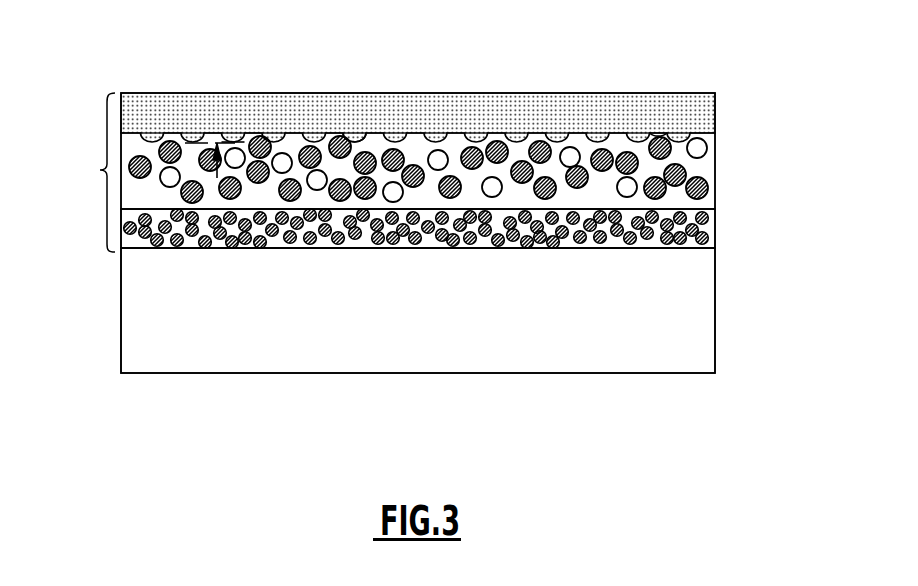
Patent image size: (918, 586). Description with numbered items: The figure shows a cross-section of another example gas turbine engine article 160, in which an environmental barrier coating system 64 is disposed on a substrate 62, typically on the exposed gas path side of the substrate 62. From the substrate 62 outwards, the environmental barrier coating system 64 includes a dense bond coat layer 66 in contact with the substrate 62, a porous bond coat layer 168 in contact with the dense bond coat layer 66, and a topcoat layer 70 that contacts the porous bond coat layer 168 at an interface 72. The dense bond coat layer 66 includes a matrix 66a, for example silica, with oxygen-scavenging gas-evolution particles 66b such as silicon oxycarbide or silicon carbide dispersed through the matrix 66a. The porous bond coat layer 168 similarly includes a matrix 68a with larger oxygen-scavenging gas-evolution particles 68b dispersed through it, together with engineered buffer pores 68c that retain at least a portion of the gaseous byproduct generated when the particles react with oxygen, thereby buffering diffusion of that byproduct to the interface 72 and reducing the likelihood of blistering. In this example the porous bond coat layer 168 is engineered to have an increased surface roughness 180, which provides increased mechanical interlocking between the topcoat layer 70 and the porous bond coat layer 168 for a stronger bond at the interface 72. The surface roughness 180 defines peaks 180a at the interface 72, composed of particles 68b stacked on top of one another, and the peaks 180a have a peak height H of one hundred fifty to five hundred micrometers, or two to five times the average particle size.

The article 160 is at (106, 364).
The substrate 62 is at (715, 314).
The environmental barrier coating system 64 is at (100, 170).
The dense bond coat layer 66 is at (715, 228).
The matrix 66a is at (690, 248).
The oxygen-scavenging gas-evolution particles 66b is at (715, 220).
The porous bond coat layer 168 is at (715, 175).
The matrix 68a is at (702, 168).
The oxygen-scavenging gas-evolution particles 68b is at (708, 193).
The engineered buffer pores 68c is at (710, 148).
The topcoat layer 70 is at (715, 112).
The interface 72 is at (660, 133).
The surface roughness 180 is at (367, 134).
The peaks 180a is at (229, 138).
The peak height H is at (217, 131).